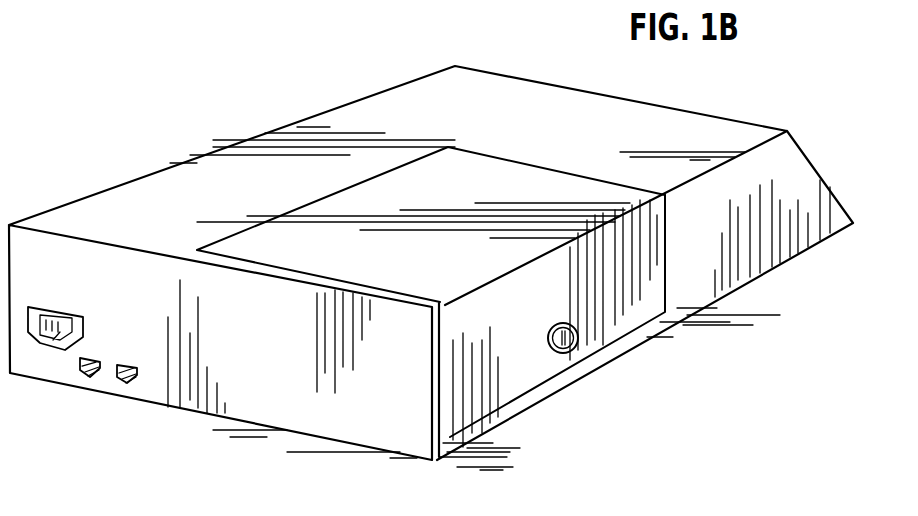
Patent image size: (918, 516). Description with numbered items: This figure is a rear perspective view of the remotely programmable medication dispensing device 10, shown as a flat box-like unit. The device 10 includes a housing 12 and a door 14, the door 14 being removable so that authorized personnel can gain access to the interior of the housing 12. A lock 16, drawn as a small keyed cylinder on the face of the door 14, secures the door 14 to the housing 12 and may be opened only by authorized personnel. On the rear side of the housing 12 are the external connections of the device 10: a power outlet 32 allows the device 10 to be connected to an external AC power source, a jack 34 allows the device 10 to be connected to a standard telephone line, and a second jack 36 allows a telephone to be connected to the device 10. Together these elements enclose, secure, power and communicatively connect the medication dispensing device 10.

The remotely programmable medication dispensing device 10 is at (776, 277).
The housing 12 is at (519, 98).
The door 14 is at (647, 308).
The lock 16 is at (577, 343).
The power outlet 32 is at (53, 347).
The jack 34 is at (95, 377).
The jack 36 is at (132, 382).